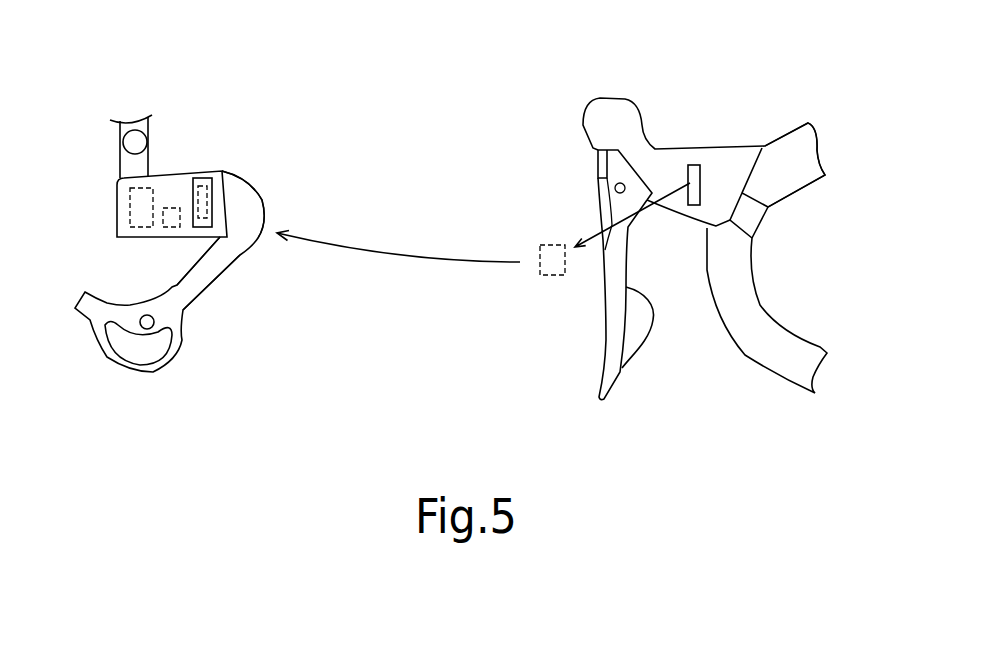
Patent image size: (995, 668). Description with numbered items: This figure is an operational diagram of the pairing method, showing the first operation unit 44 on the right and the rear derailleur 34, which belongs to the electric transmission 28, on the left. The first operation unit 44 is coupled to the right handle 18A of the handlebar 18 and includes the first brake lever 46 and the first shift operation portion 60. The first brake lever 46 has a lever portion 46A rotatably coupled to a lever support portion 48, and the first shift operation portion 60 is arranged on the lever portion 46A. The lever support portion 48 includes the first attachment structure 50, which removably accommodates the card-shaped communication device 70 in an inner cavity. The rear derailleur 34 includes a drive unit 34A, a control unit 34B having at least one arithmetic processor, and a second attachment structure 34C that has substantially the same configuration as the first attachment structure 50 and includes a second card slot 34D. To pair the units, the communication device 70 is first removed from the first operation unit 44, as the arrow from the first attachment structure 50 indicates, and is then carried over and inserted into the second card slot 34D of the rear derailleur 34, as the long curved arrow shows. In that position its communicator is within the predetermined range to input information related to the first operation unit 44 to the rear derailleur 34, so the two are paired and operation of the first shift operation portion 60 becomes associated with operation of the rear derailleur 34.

The rear derailleur 34 is at (74, 134).
The bicycle component 28 is at (169, 243).
The drive unit 34A is at (130, 207).
The control unit 34B is at (172, 228).
The second attachment structure 34C is at (220, 172).
The second card slot 34D is at (215, 215).
The communication device 70 is at (193, 200).
The first operation unit 44 is at (715, 62).
The right handle 18A is at (797, 129).
The handlebar 18 is at (767, 258).
The first brake lever 46 is at (513, 147).
The lever support portion 48 is at (595, 152).
The lever portion 46A is at (607, 208).
The first shift operation portion 60 is at (650, 303).
The first attachment structure 50 is at (703, 176).